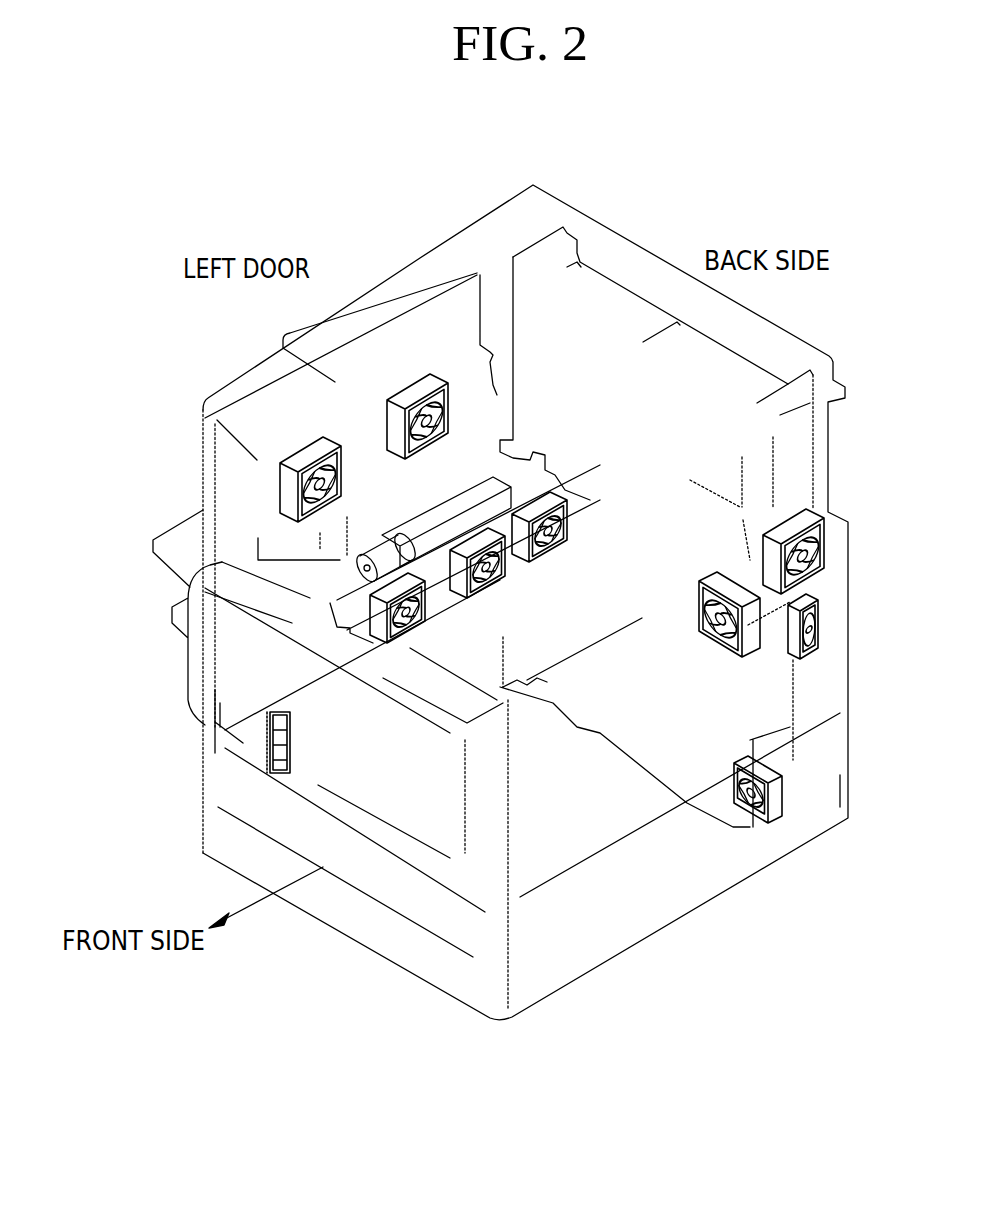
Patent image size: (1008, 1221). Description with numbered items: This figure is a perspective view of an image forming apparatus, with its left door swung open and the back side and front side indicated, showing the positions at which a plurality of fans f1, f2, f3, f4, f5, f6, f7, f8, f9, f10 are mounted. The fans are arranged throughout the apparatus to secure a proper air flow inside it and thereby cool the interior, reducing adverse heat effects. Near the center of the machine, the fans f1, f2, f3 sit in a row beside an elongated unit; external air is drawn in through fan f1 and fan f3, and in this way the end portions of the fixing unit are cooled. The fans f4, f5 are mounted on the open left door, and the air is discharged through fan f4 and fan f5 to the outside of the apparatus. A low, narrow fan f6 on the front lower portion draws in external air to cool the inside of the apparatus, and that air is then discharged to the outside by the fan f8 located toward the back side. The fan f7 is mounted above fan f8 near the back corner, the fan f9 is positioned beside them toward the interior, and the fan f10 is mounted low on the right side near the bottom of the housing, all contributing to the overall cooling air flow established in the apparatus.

The fan f1 is at (420, 631).
The fan f2 is at (487, 591).
The fan f3 is at (549, 547).
The fan f4 is at (318, 446).
The fan f5 is at (421, 382).
The fan f6 is at (268, 750).
The fan f7 is at (823, 542).
The fan f8 is at (820, 610).
The fan f9 is at (708, 630).
The fan f10 is at (782, 790).